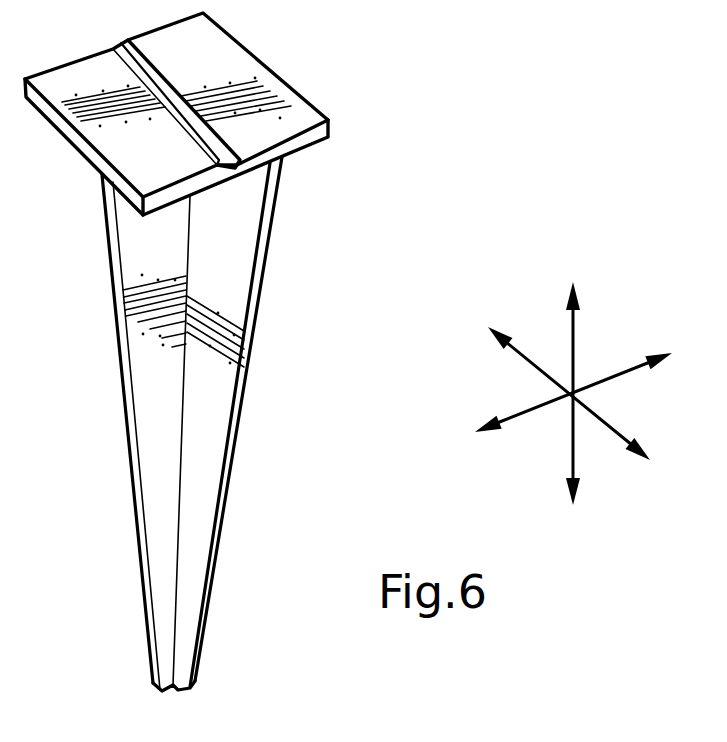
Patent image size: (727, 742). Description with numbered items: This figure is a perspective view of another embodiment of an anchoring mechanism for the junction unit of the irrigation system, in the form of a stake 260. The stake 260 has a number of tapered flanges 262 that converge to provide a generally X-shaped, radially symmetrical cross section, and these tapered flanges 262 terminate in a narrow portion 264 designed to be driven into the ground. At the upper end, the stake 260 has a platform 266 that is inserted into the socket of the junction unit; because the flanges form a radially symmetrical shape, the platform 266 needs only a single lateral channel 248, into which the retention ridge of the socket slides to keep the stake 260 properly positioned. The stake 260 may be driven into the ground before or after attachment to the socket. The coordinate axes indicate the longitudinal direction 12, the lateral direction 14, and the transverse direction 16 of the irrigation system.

The stake 260 is at (330, 41).
The platform 266 is at (345, 88).
The lateral channel 248 is at (158, 68).
The tapered flanges 262 is at (165, 482).
The narrow portion 264 is at (175, 690).
The longitudinal direction 12 is at (525, 407).
The lateral direction 14 is at (611, 423).
The transverse direction 16 is at (570, 333).